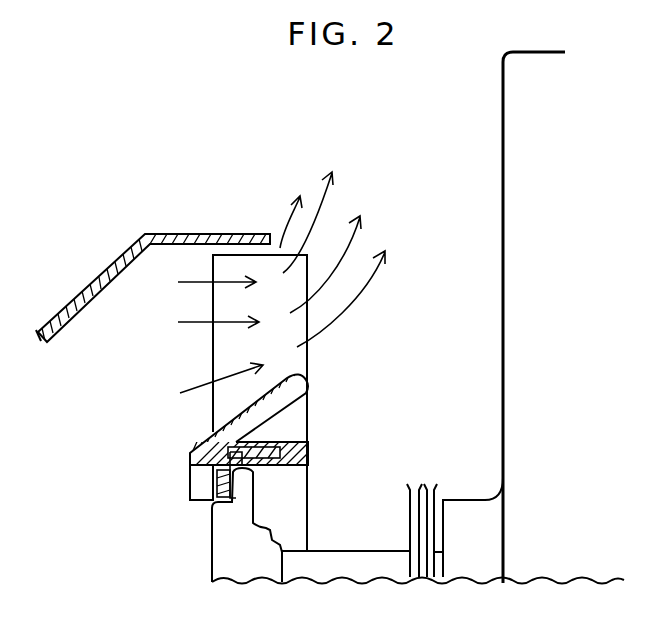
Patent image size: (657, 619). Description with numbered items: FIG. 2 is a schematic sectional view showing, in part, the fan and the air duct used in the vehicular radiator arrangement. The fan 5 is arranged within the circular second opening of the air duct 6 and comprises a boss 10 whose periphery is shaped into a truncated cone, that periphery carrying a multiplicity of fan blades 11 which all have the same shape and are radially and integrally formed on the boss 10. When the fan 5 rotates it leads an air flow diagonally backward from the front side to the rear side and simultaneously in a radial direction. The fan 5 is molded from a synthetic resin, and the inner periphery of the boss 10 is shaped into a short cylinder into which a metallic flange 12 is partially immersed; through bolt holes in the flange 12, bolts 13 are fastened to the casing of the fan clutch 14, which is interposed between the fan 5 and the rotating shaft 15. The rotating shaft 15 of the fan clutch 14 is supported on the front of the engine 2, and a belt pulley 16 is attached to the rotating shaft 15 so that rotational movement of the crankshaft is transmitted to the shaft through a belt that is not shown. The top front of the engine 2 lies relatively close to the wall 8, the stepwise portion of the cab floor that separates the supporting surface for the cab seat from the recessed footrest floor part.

The engine 2 is at (503, 240).
The fan 5 is at (308, 417).
The air duct 6 is at (100, 272).
The wall 8 is at (223, 234).
The boss 10 is at (300, 390).
The fan blades 11 is at (302, 358).
The metallic flange 12 is at (217, 492).
The bolts 13 is at (213, 482).
The fan clutch 14 is at (217, 545).
The rotating shaft 15 is at (335, 552).
The belt pulley 16 is at (438, 488).